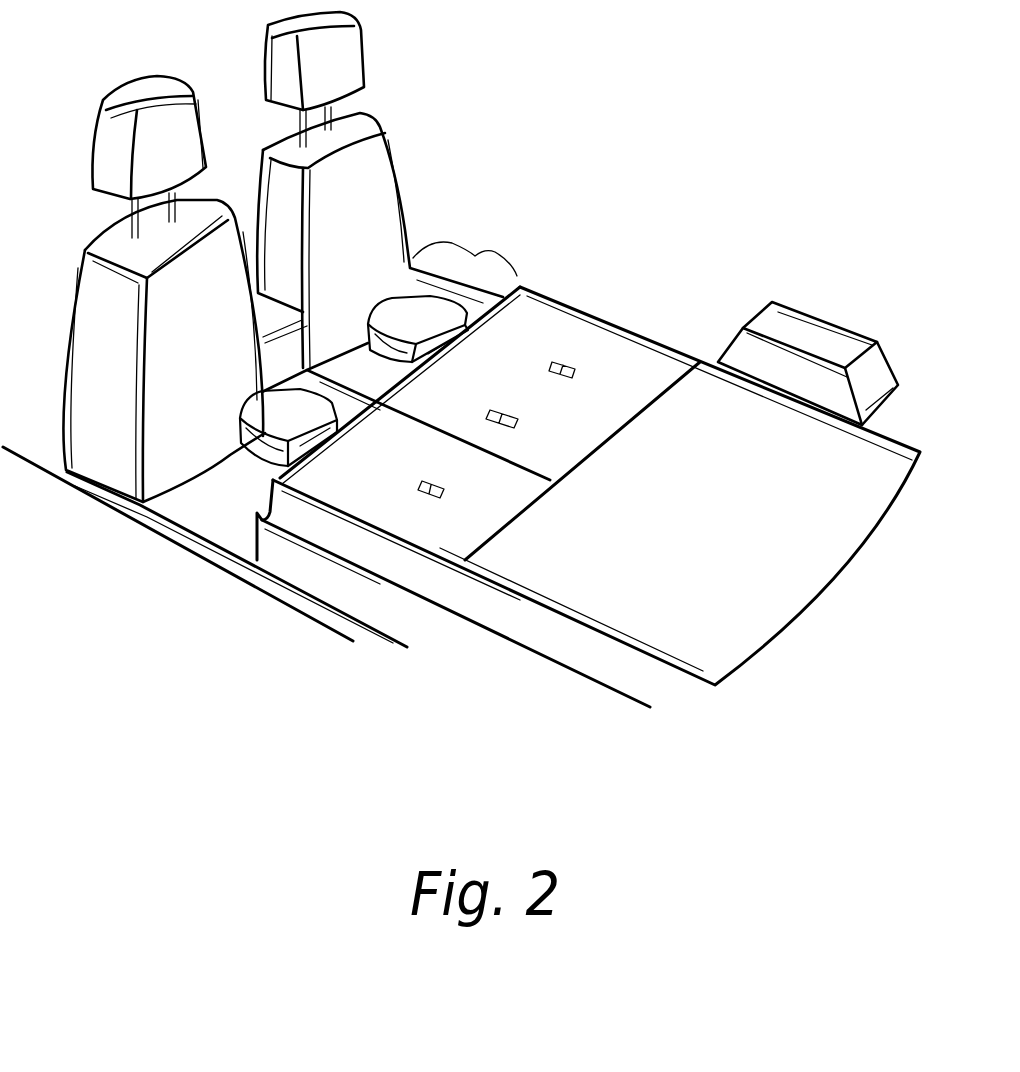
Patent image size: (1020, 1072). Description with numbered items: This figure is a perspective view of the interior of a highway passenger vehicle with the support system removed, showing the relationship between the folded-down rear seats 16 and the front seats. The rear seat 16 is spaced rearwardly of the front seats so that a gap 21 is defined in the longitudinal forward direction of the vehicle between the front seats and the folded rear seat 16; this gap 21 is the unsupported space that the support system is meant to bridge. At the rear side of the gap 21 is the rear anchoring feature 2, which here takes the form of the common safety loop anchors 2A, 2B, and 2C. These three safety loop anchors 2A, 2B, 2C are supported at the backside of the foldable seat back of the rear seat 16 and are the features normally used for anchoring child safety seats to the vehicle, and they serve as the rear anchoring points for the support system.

The rear anchoring feature 2 is at (572, 440).
The safety loop anchor 2A is at (421, 494).
The safety loop anchor 2B is at (510, 402).
The safety loop anchor 2C is at (573, 358).
The gap 21 is at (488, 242).
The rear seat 16 is at (238, 572).